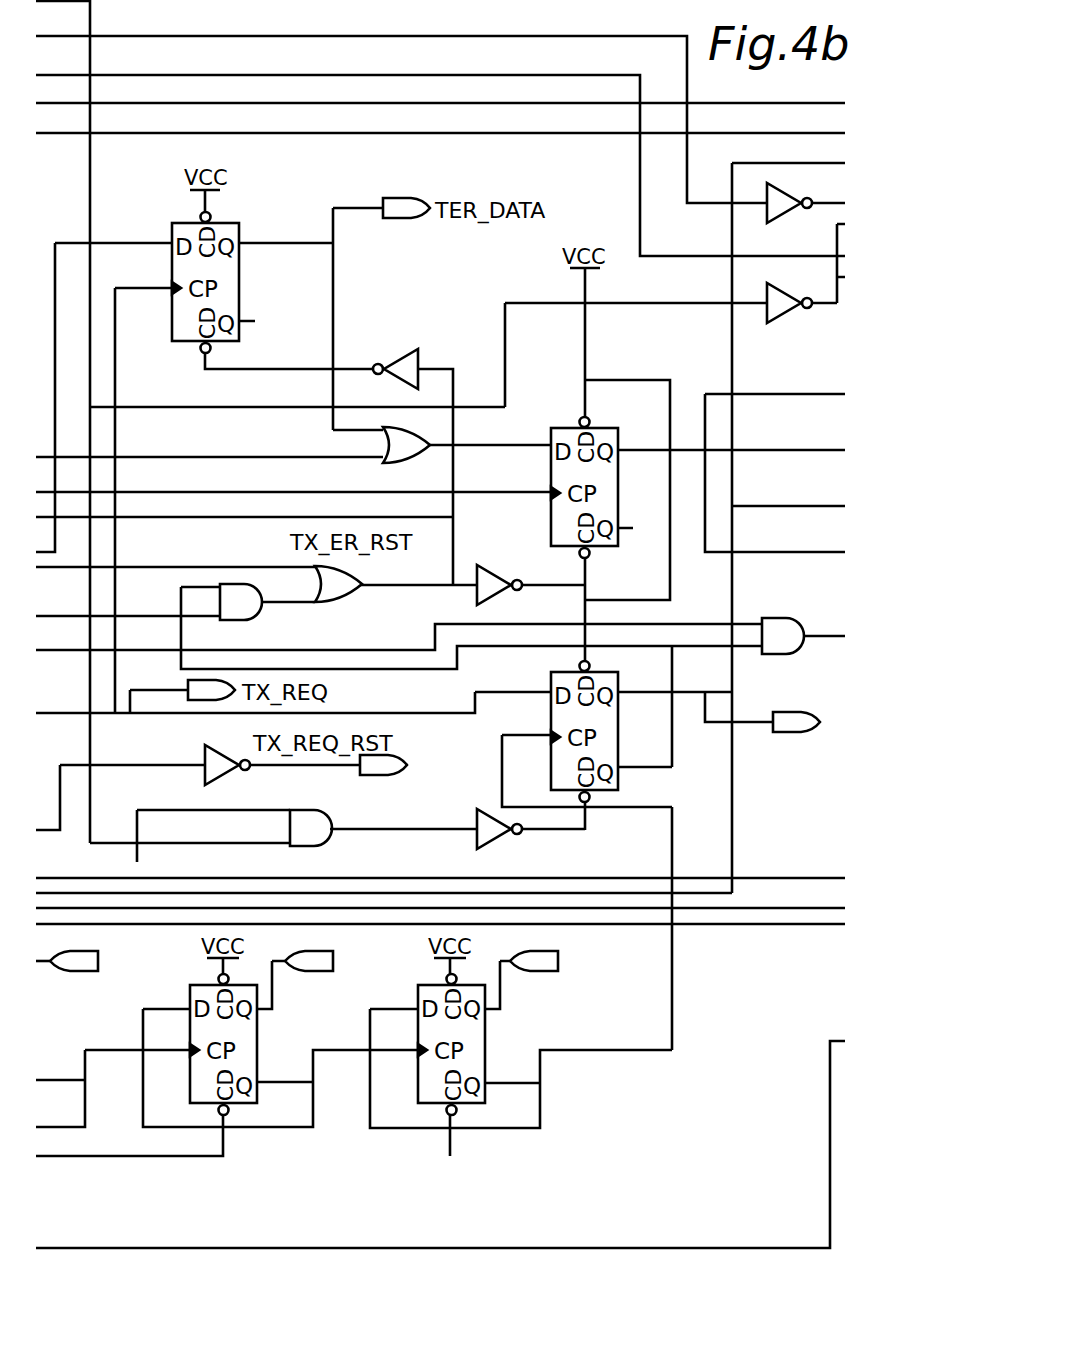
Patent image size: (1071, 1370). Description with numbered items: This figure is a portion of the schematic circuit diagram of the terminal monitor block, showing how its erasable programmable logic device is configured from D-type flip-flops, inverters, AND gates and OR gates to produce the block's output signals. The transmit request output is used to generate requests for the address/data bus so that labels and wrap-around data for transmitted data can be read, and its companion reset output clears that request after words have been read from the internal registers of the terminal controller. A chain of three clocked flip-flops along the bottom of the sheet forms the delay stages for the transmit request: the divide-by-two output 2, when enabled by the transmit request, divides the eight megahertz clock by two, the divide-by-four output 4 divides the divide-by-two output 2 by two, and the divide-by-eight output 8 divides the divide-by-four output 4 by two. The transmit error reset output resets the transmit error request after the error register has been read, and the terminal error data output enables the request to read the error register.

The DIV_2 divide-by-two clock input port 2 is at (102, 964).
The DIV_4 divide-by-four clock input port 4 is at (328, 980).
The DIV_8 divide-by-eight clock input port 8 is at (555, 980).